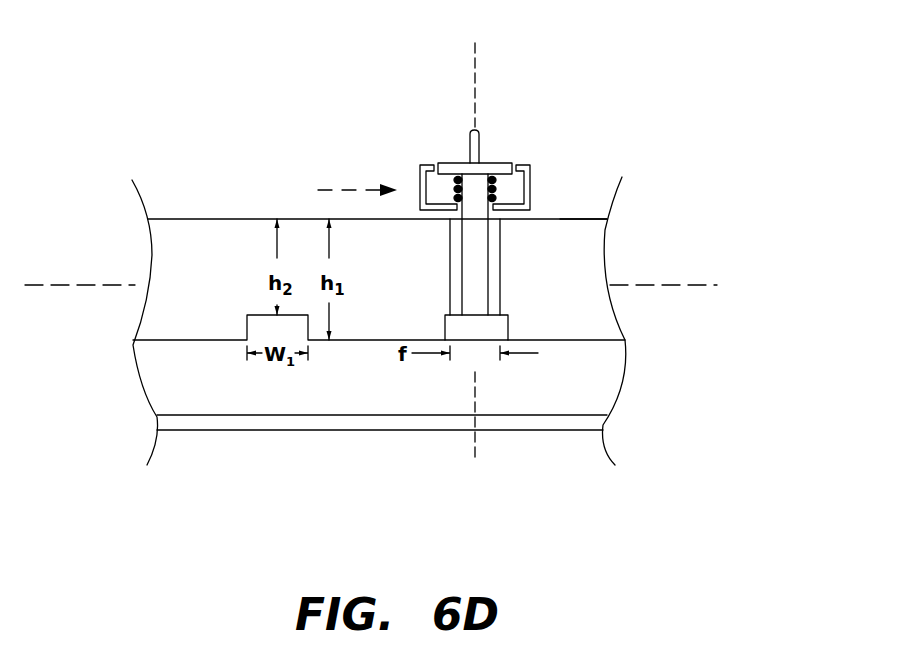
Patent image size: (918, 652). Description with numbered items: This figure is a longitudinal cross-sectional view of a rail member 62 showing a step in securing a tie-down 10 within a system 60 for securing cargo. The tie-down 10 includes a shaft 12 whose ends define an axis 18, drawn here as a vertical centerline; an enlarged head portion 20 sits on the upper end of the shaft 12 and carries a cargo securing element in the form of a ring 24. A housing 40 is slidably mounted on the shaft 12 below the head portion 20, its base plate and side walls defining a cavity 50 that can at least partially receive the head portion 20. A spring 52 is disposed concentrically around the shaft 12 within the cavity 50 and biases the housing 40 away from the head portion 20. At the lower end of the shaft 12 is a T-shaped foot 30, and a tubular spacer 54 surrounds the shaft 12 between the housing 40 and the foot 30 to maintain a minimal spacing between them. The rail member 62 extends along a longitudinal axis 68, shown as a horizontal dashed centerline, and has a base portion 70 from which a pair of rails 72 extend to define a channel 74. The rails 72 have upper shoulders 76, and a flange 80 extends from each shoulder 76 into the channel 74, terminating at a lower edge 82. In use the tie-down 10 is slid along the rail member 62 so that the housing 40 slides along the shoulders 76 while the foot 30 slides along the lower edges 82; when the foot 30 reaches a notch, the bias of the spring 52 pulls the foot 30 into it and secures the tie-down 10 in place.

The tie-down 10 is at (542, 153).
The shaft 12 is at (490, 243).
The axis 18 is at (478, 88).
The head portion 20 is at (452, 162).
The ring 24 is at (480, 143).
The foot 30 is at (473, 340).
The housing 40 is at (418, 175).
The cavity 50 is at (512, 187).
The spring 52 is at (452, 183).
The spacer 54 is at (500, 280).
The system 60 is at (660, 94).
The rail member 62 is at (590, 211).
The longitudinal axis 68 is at (662, 287).
The base portion 70 is at (190, 426).
The rails 72 is at (162, 398).
The channel 74 is at (584, 400).
The shoulders 76 is at (188, 218).
The flange 80 is at (168, 245).
The lower edge 82 is at (160, 344).